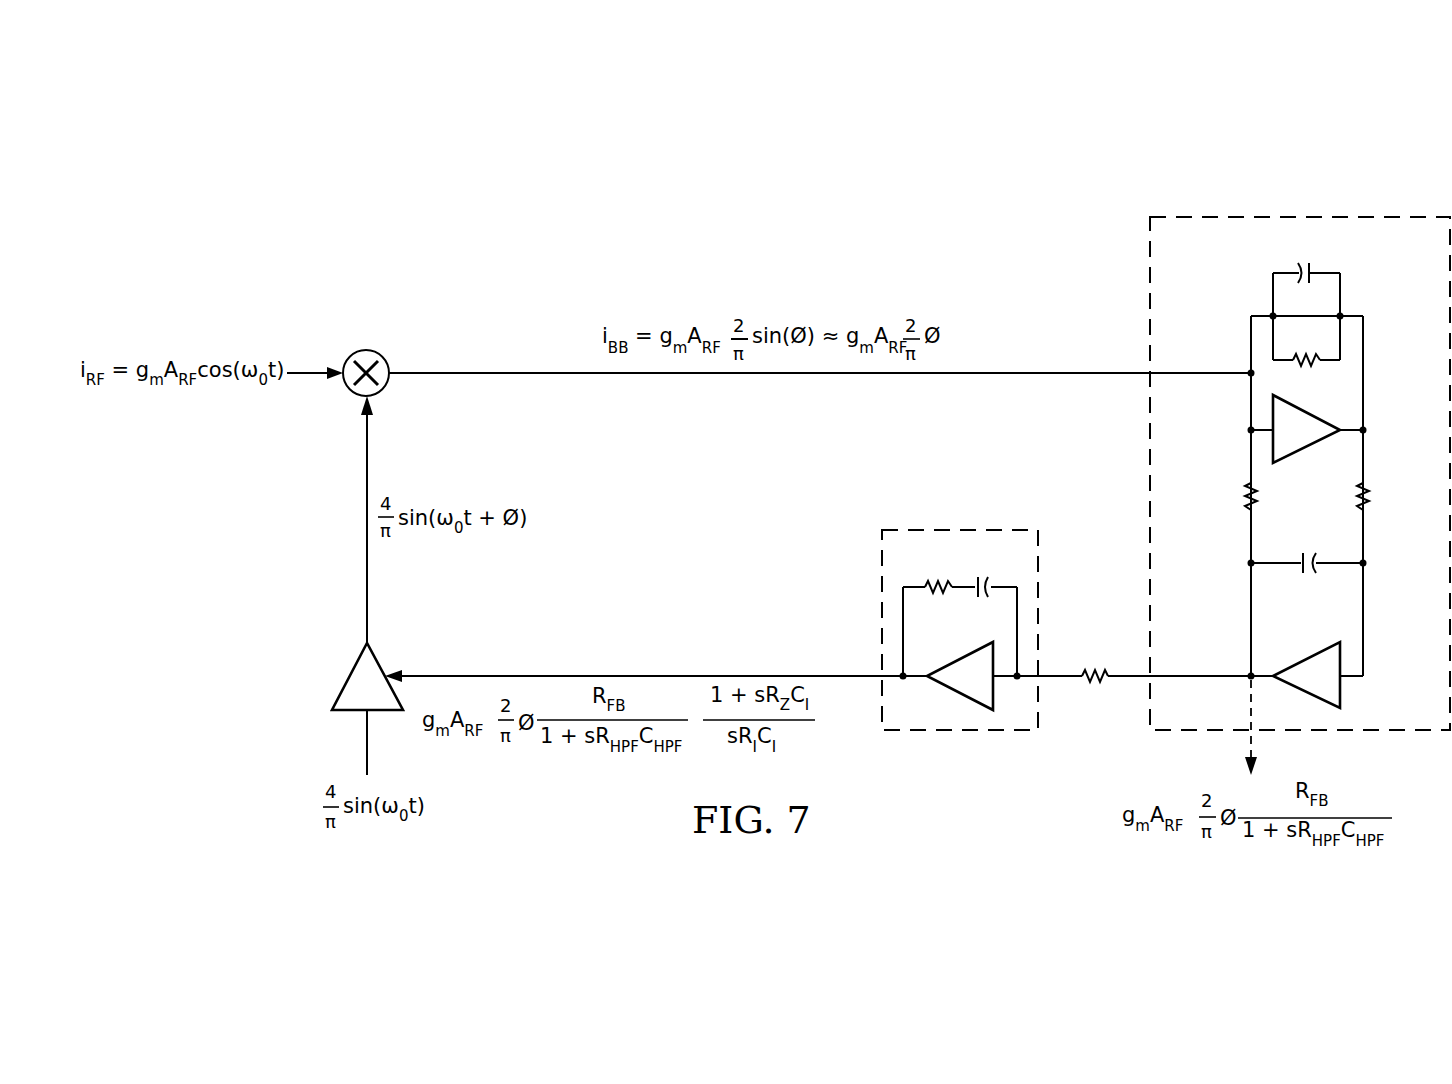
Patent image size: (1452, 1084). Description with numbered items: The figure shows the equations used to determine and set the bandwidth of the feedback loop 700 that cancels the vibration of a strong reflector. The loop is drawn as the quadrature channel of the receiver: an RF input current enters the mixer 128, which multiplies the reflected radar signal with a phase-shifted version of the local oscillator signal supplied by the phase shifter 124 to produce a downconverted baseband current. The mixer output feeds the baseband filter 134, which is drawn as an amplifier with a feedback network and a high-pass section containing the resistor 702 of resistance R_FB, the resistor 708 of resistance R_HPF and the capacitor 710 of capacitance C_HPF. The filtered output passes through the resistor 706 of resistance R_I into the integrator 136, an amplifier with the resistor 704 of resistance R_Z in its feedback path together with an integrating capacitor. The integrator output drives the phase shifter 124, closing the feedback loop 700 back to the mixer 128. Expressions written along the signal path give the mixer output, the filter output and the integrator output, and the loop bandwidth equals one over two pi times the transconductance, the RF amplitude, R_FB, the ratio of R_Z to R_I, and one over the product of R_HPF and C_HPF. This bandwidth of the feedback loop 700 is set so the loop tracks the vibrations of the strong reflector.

The feedback loop 700 is at (148, 258).
The phase shifter 124 is at (345, 685).
The mixer 128 is at (357, 350).
The baseband filter 134 is at (1345, 210).
The integrator 136 is at (945, 522).
The resistor 702 is at (1245, 498).
The resistor 704 is at (938, 592).
The resistor 706 is at (1095, 690).
The resistor 708 is at (1370, 498).
The capacitor 710 is at (1307, 575).